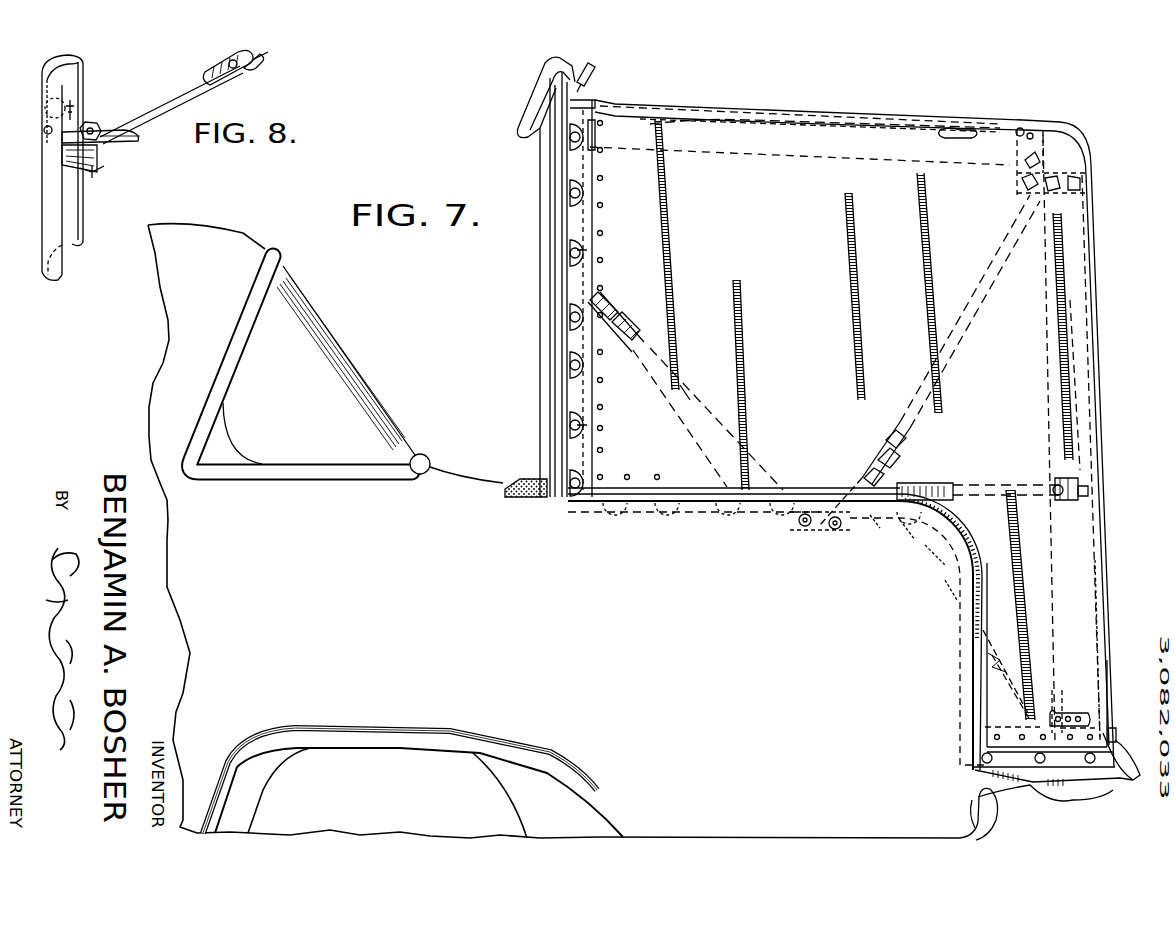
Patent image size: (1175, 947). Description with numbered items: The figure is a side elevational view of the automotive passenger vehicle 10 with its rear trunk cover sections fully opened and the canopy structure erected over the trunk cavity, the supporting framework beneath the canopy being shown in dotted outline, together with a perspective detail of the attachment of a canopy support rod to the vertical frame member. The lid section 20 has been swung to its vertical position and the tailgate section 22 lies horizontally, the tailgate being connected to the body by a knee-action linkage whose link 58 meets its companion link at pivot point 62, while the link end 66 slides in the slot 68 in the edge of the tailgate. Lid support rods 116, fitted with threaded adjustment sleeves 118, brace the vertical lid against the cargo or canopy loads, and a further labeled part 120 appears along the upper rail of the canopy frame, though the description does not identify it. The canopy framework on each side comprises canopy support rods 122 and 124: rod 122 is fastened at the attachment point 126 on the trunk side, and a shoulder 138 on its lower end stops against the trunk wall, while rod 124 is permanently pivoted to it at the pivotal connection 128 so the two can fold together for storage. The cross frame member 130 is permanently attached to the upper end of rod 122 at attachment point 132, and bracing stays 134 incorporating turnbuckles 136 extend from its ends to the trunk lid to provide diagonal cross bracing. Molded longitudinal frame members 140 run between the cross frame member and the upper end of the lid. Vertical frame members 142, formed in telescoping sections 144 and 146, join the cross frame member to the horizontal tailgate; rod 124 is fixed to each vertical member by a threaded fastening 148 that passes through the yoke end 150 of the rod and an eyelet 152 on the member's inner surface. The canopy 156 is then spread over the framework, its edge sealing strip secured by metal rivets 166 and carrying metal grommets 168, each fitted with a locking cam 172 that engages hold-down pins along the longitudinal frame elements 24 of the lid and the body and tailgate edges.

In FIG. 7, the automotive passenger vehicle 10 is at (252, 229).
In FIG. 7, the lid section 20 is at (540, 306).
In FIG. 7, the tailgate section 22 is at (1022, 790).
In FIG. 7, the longitudinal frame elements 24 is at (585, 390).
In FIG. 7, the link 58 is at (950, 600).
In FIG. 7, the pivot point 62 is at (960, 680).
In FIG. 7, the link end 66 is at (1048, 733).
In FIG. 7, the slot 68 is at (1113, 730).
In FIG. 7, the lid support rods 116 is at (680, 386).
In FIG. 8, the threaded adjustment sleeves 118 is at (244, 80).
In FIG. 7, the threaded adjustment sleeves 118 is at (628, 312).
In FIG. 7, the door top rail 120 is at (851, 111).
In FIG. 7, the canopy support rod 122 is at (920, 373).
In FIG. 8, the canopy support rod 124 is at (172, 100).
In FIG. 7, the canopy support rod 124 is at (992, 482).
In FIG. 7, the attachment point 126 is at (833, 530).
In FIG. 7, the pivotal connection 128 is at (872, 480).
In FIG. 7, the cross frame member 130 is at (1057, 155).
In FIG. 7, the attachment point 132 is at (1020, 190).
In FIG. 7, the bracing stays 134 is at (795, 118).
In FIG. 7, the turnbuckles 136 is at (976, 128).
In FIG. 7, the shoulder 138 is at (850, 532).
In FIG. 7, the longitudinal frame members 140 is at (800, 165).
In FIG. 7, the vertical frame members 142 is at (1106, 438).
In FIG. 8, the vertical frame member section 144 is at (40, 96).
In FIG. 7, the vertical frame member section 144 is at (1085, 352).
In FIG. 8, the vertical frame member section 146 is at (43, 210).
In FIG. 7, the vertical frame member section 146 is at (1095, 585).
In FIG. 8, the threaded fastening 148 is at (98, 124).
In FIG. 7, the threaded fastening 148 is at (1063, 498).
In FIG. 8, the yoke end 150 is at (126, 146).
In FIG. 7, the yoke end 150 is at (1056, 480).
In FIG. 8, the eyelet 152 is at (95, 172).
In FIG. 7, the eyelet 152 is at (526, 478).
In FIG. 7, the canopy 156 is at (845, 195).
In FIG. 7, the metal rivets 166 is at (604, 184).
In FIG. 7, the metal grommets 168 is at (604, 243).
In FIG. 7, the locking cam 172 is at (580, 254).